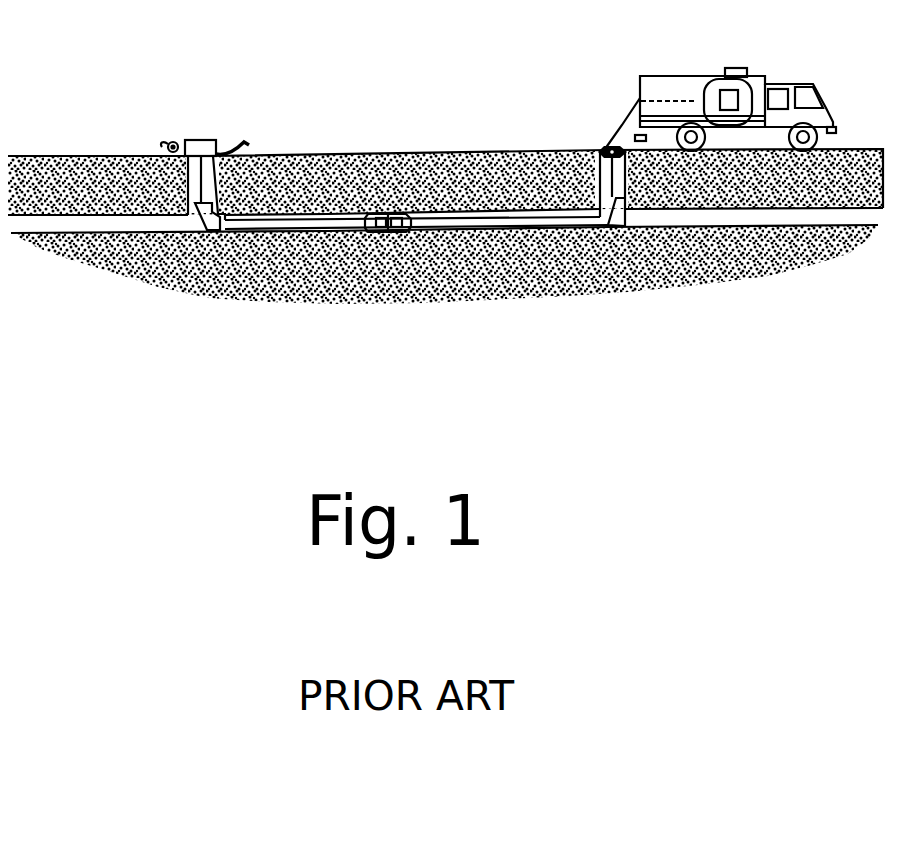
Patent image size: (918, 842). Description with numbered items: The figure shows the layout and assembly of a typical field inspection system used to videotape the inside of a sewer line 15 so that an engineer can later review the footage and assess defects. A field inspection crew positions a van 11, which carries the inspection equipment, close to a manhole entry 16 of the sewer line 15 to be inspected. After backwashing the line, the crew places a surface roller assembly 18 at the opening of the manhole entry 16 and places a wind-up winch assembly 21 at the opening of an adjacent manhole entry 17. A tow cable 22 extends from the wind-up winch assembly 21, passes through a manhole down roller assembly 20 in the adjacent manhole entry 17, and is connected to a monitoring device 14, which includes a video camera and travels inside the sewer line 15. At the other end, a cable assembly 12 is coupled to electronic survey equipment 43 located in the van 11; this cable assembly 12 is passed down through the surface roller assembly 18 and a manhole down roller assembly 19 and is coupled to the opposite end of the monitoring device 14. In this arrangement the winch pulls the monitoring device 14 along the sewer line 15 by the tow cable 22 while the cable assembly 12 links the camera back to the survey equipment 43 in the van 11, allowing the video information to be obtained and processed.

The van 11 is at (663, 80).
The cable assembly 12 is at (611, 111).
The monitoring device 14 is at (378, 224).
The sewer line 15 is at (619, 212).
The manhole entry 16 is at (600, 168).
The adjacent manhole entry 17 is at (191, 177).
The surface roller assembly 18 is at (592, 141).
The manhole down roller assembly 19 is at (604, 210).
The manhole down roller assembly 20 is at (200, 216).
The wind-up winch assembly 21 is at (194, 140).
The tow cable 22 is at (276, 222).
The electronic survey equipment 43 is at (735, 92).